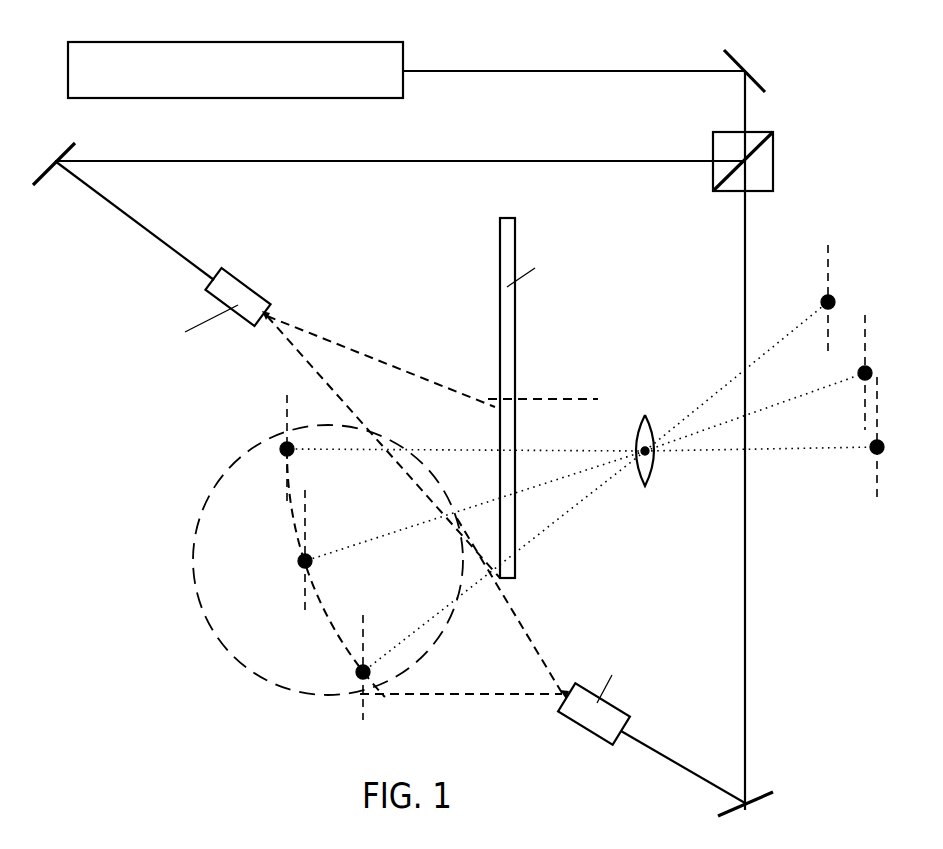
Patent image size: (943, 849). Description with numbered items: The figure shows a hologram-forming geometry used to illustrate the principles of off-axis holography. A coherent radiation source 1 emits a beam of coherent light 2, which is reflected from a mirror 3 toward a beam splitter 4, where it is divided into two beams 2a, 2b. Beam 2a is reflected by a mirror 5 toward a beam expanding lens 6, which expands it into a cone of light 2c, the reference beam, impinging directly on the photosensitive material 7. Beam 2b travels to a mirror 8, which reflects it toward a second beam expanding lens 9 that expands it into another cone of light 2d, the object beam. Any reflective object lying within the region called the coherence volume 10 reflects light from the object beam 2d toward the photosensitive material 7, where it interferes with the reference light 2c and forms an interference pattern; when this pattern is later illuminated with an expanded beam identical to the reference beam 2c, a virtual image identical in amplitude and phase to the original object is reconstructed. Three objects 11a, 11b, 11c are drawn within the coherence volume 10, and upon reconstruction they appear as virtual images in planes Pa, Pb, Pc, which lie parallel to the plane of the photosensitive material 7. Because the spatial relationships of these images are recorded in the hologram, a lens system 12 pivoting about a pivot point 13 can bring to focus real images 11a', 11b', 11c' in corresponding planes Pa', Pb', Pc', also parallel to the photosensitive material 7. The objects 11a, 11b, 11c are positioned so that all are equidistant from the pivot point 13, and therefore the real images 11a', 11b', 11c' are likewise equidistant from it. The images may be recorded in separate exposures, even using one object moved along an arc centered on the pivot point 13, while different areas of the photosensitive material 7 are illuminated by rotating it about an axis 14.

The coherent radiation source 1 is at (267, 50).
The beam of coherent light 2 is at (515, 68).
The beam 2a is at (470, 155).
The beam 2b is at (748, 608).
The cone of light (reference beam) 2c is at (368, 360).
The cone of light (object beam) 2d is at (473, 683).
The mirror 3 is at (738, 57).
The beam splitter 4 is at (760, 157).
The mirror 5 is at (72, 143).
The beam expanding lens 6 is at (241, 283).
The photosensitive material 7 is at (507, 253).
The mirror 8 is at (757, 803).
The beam expanding lens 9 is at (583, 718).
The coherence volume 10 is at (207, 617).
The object 11a is at (324, 656).
The object 11b is at (275, 551).
The object 11c is at (263, 449).
The real image 11a' is at (799, 291).
The real image 11b' is at (824, 364).
The real image 11c' is at (843, 435).
The lens system 12 is at (642, 429).
The pivot point 13 is at (652, 455).
The axis 14 is at (547, 395).
The plane Pa is at (368, 656).
The plane Pb is at (310, 549).
The plane Pc is at (288, 439).
The plane Pa' is at (835, 291).
The plane Pb' is at (870, 364).
The plane Pc' is at (886, 435).